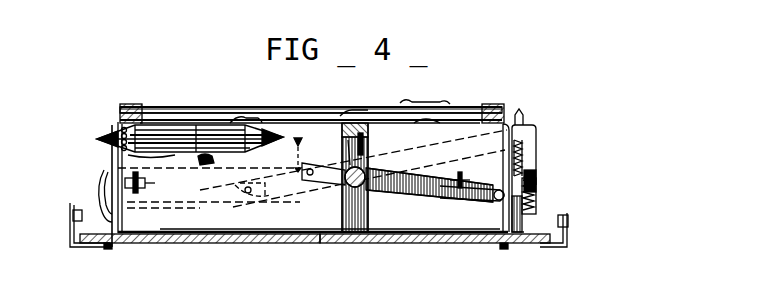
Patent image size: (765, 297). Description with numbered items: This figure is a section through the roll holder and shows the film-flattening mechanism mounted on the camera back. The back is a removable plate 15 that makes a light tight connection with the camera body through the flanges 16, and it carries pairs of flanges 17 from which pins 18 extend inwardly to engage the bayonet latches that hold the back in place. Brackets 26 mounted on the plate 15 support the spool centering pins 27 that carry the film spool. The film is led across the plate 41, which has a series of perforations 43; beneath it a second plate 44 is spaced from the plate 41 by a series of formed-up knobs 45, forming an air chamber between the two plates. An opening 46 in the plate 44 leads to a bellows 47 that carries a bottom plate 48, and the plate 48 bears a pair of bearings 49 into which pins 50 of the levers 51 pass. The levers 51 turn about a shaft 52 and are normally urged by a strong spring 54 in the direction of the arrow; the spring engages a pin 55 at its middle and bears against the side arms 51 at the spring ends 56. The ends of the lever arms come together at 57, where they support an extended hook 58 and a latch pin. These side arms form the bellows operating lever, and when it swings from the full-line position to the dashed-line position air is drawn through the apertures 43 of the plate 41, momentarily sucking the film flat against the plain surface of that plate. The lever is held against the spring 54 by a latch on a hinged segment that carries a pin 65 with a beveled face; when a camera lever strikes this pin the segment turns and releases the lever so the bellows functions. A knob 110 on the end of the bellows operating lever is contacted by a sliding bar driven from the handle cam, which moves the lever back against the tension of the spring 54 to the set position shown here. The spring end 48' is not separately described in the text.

The removable plate 15 is at (404, 244).
The flanges 16 is at (242, 244).
The flanges 17 is at (70, 225).
The pins 18 is at (82, 208).
The brackets 26 is at (108, 249).
The spool centering pins 27 is at (478, 177).
The plate 41 is at (334, 107).
The perforations 43 is at (405, 104).
The second plate 44 is at (426, 124).
The formed-up knobs 45 is at (238, 108).
The opening 46 is at (250, 126).
The bellows 47 is at (197, 128).
The bottom plate 48 is at (121, 144).
The spring end 48' is at (213, 214).
The bearings 49 is at (206, 166).
The pins 50 is at (262, 212).
The levers 51 is at (312, 183).
The shaft 52 is at (368, 190).
The strong spring 54 is at (429, 196).
The pin 55 is at (364, 148).
The spring ends 56 is at (314, 155).
The lever arm junction 57 is at (500, 201).
The extended hook 58 is at (521, 122).
The pin 65 is at (525, 152).
The knob 110 is at (538, 198).